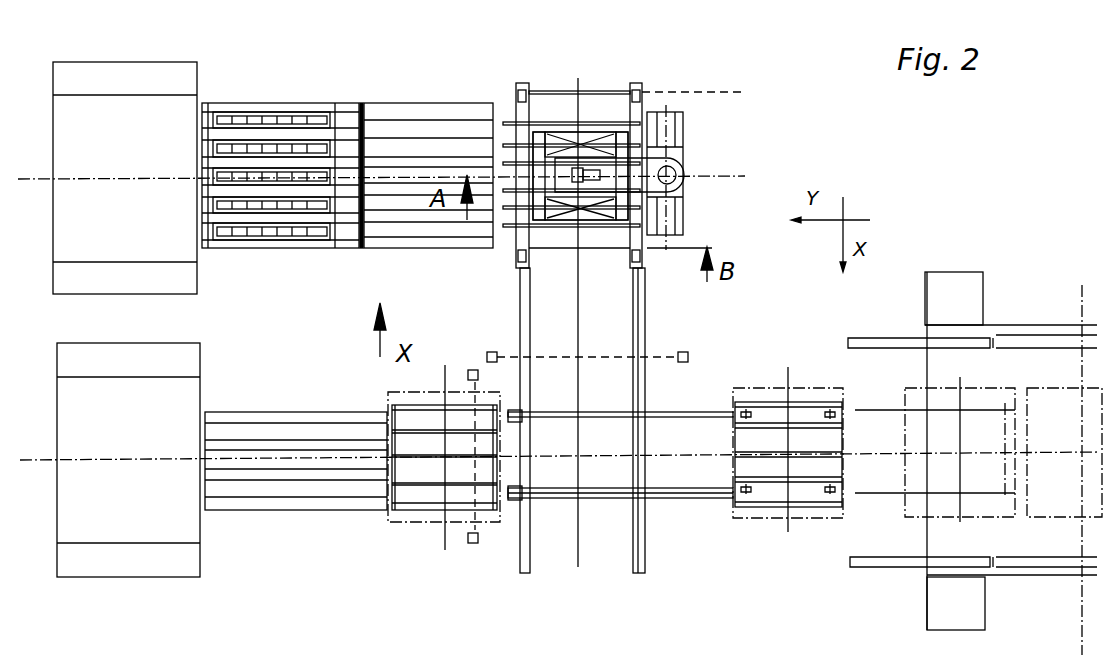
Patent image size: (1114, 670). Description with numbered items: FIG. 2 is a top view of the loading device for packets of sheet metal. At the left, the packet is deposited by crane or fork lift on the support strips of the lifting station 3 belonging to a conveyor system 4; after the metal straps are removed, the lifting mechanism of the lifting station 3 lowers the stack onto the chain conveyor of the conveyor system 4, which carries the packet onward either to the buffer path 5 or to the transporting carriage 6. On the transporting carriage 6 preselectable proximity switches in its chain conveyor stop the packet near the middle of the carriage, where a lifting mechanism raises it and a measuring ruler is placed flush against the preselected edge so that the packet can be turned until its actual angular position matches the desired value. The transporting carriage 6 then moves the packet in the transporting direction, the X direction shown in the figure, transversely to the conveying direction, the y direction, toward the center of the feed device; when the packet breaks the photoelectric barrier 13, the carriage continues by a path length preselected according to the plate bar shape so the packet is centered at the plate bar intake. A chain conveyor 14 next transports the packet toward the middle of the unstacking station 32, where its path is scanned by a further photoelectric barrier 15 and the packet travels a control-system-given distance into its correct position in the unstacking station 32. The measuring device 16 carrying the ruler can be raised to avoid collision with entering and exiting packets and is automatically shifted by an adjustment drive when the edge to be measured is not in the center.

The lifting station 3 is at (288, 122).
The conveyor system 4 is at (315, 162).
The buffer path 5 is at (408, 162).
The transporting carriage 6 is at (547, 112).
The photoelectric barrier 13 is at (693, 350).
The chain conveyor 14 is at (436, 457).
The photoelectric barrier 15 is at (475, 548).
The measuring device 16 is at (669, 92).
The unstacking station 32 is at (433, 380).